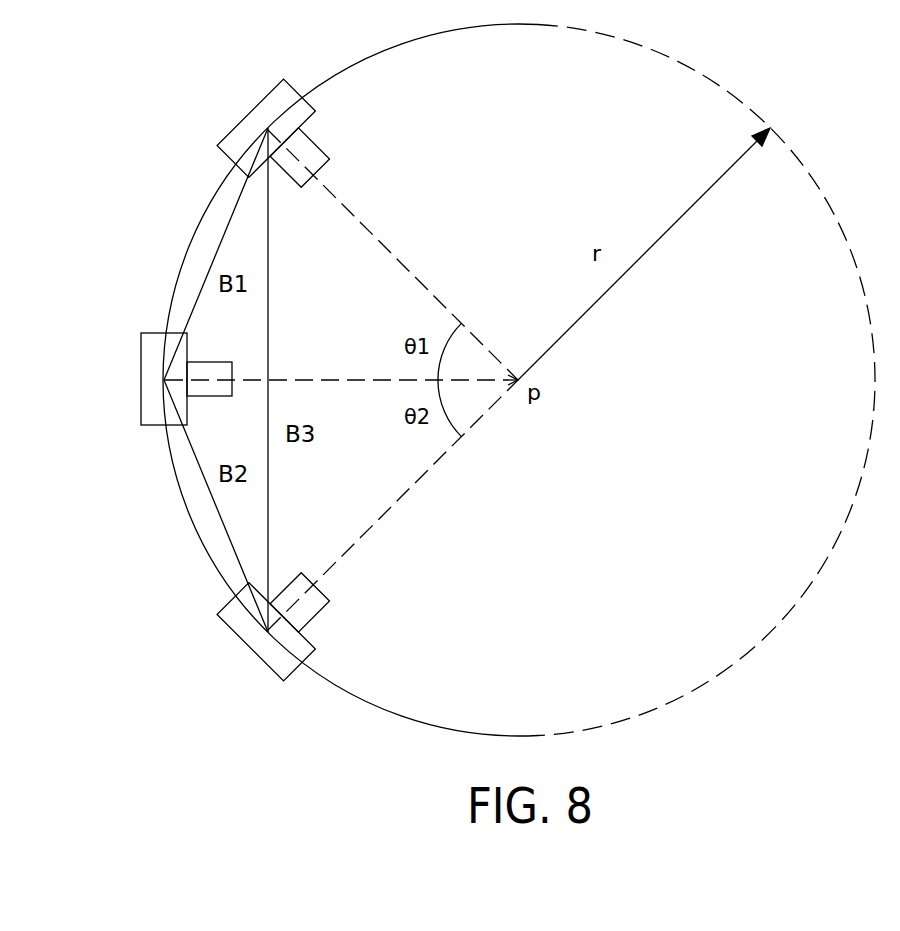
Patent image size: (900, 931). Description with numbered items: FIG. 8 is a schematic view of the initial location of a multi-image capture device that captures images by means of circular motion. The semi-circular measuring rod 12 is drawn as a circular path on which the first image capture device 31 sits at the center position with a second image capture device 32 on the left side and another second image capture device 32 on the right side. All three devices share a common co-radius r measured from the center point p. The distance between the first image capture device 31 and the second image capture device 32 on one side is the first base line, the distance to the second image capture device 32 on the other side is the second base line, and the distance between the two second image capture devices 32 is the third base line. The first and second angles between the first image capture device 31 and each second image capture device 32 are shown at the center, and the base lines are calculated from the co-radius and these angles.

The measuring rod 12 is at (337, 73).
The first image capture device 31 is at (140, 380).
The second image capture device 32 is at (251, 105).